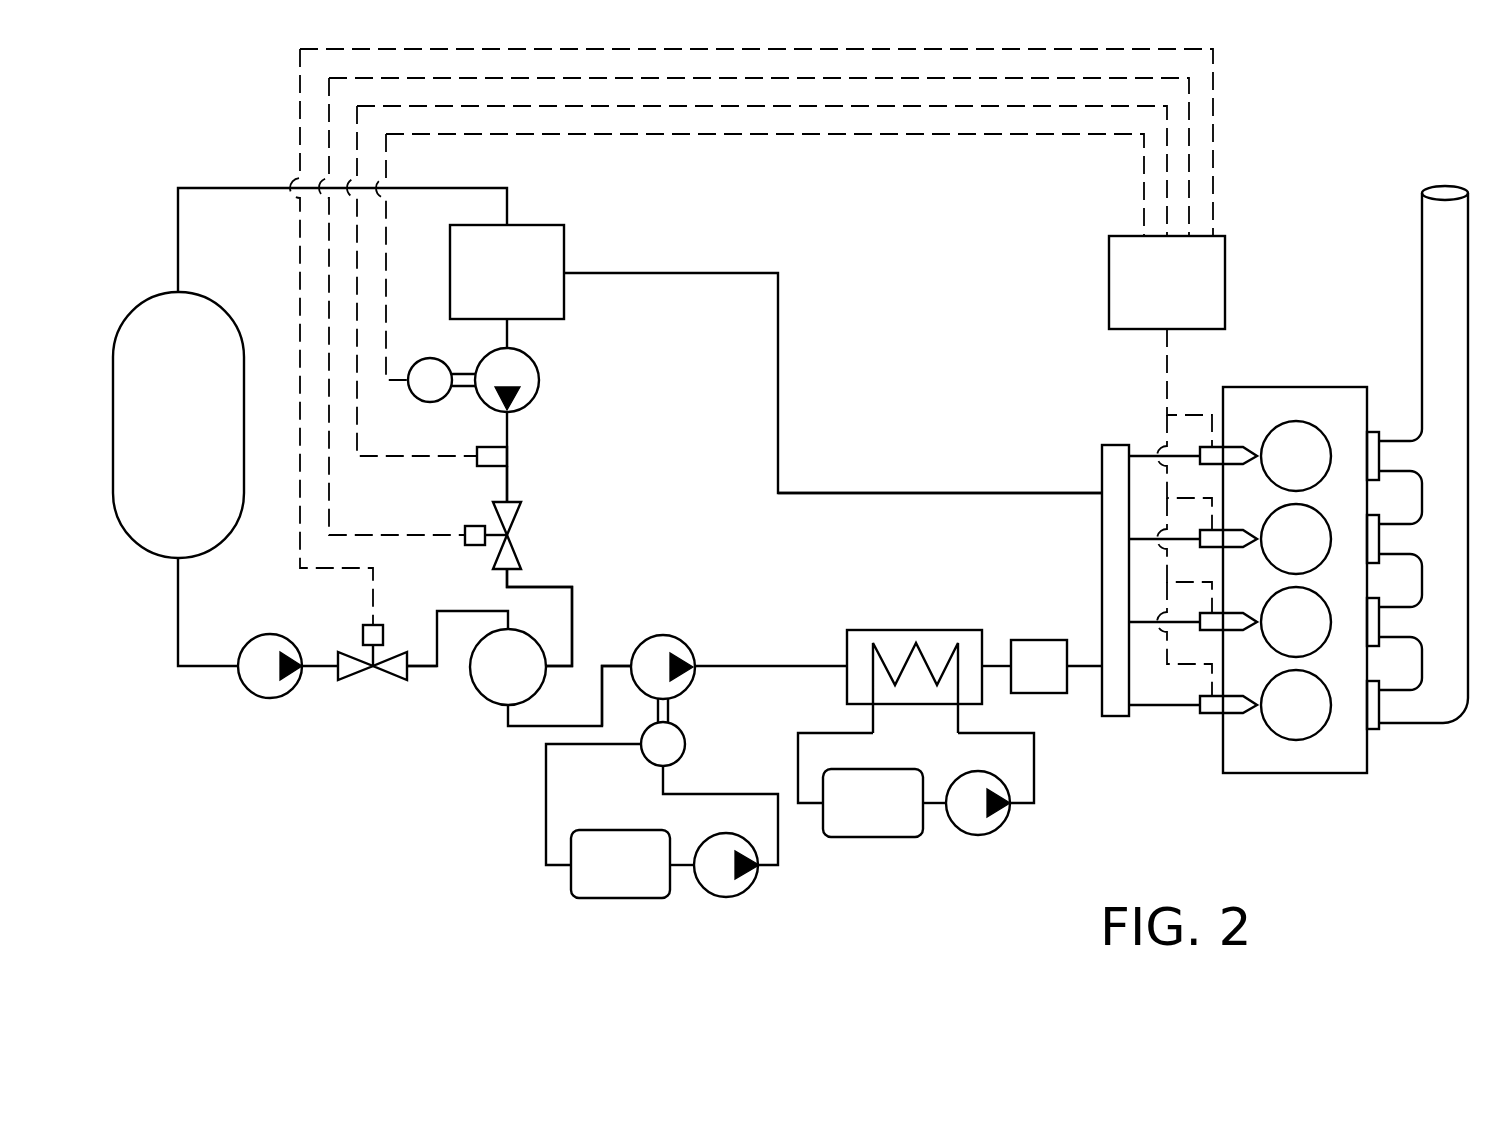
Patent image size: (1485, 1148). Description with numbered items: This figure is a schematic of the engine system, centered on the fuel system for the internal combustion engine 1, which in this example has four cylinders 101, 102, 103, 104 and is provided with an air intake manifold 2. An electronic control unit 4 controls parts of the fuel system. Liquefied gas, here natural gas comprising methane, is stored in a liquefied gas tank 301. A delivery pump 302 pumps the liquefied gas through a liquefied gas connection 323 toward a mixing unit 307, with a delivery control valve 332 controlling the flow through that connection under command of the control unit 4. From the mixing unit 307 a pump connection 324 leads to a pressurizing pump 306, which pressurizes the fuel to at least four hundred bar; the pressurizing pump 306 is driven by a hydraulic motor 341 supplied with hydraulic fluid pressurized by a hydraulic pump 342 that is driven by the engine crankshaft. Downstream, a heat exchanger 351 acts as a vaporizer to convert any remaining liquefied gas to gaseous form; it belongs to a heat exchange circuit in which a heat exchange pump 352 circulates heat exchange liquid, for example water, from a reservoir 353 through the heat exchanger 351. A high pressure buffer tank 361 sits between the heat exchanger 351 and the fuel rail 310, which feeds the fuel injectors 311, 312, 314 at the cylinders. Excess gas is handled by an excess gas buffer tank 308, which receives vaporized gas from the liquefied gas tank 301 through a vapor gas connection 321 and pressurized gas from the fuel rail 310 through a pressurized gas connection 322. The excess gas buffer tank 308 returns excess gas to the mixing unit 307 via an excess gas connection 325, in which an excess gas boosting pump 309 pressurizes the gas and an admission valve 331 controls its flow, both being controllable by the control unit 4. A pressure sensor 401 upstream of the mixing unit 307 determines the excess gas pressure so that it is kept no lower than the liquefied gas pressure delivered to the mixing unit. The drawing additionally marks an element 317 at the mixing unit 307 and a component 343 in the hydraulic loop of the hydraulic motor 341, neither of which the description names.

The engine 1 is at (1301, 614).
The air intake manifold 2 is at (1410, 725).
The electronic control unit 4 is at (1225, 282).
The cylinder 101 is at (1275, 470).
The cylinder 102 is at (1275, 553).
The cylinder 103 is at (1275, 636).
The cylinder 104 is at (1275, 719).
The liquefied gas tank 301 is at (142, 556).
The delivery pump 302 is at (262, 698).
The pressurizing pump 306 is at (663, 636).
The mixing unit 307 is at (490, 706).
The excess gas buffer tank 308 is at (564, 250).
The excess gas boosting pump 309 is at (539, 378).
The fuel rail 310 is at (1101, 545).
The fuel injector 311 is at (1205, 447).
The fuel injector 312 is at (1205, 531).
The fuel injector 314 is at (1205, 632).
The pump drive 317 is at (503, 670).
The vapor gas connection 321 is at (232, 188).
The pressurized gas connection 322 is at (935, 493).
The liquefied gas connection 323 is at (420, 668).
The pump connection 324 is at (618, 665).
The excess gas connection 325 is at (507, 487).
The admission valve 331 is at (518, 550).
The delivery control valve 332 is at (390, 678).
The hydraulic motor 341 is at (685, 740).
The hydraulic pump 342 is at (730, 897).
The cooler 343 is at (628, 900).
The heat exchanger 351 is at (918, 630).
The heat exchange pump 352 is at (980, 836).
The reservoir 353 is at (878, 838).
The high pressure buffer tank 361 is at (1040, 640).
The pressure sensor 401 is at (508, 452).